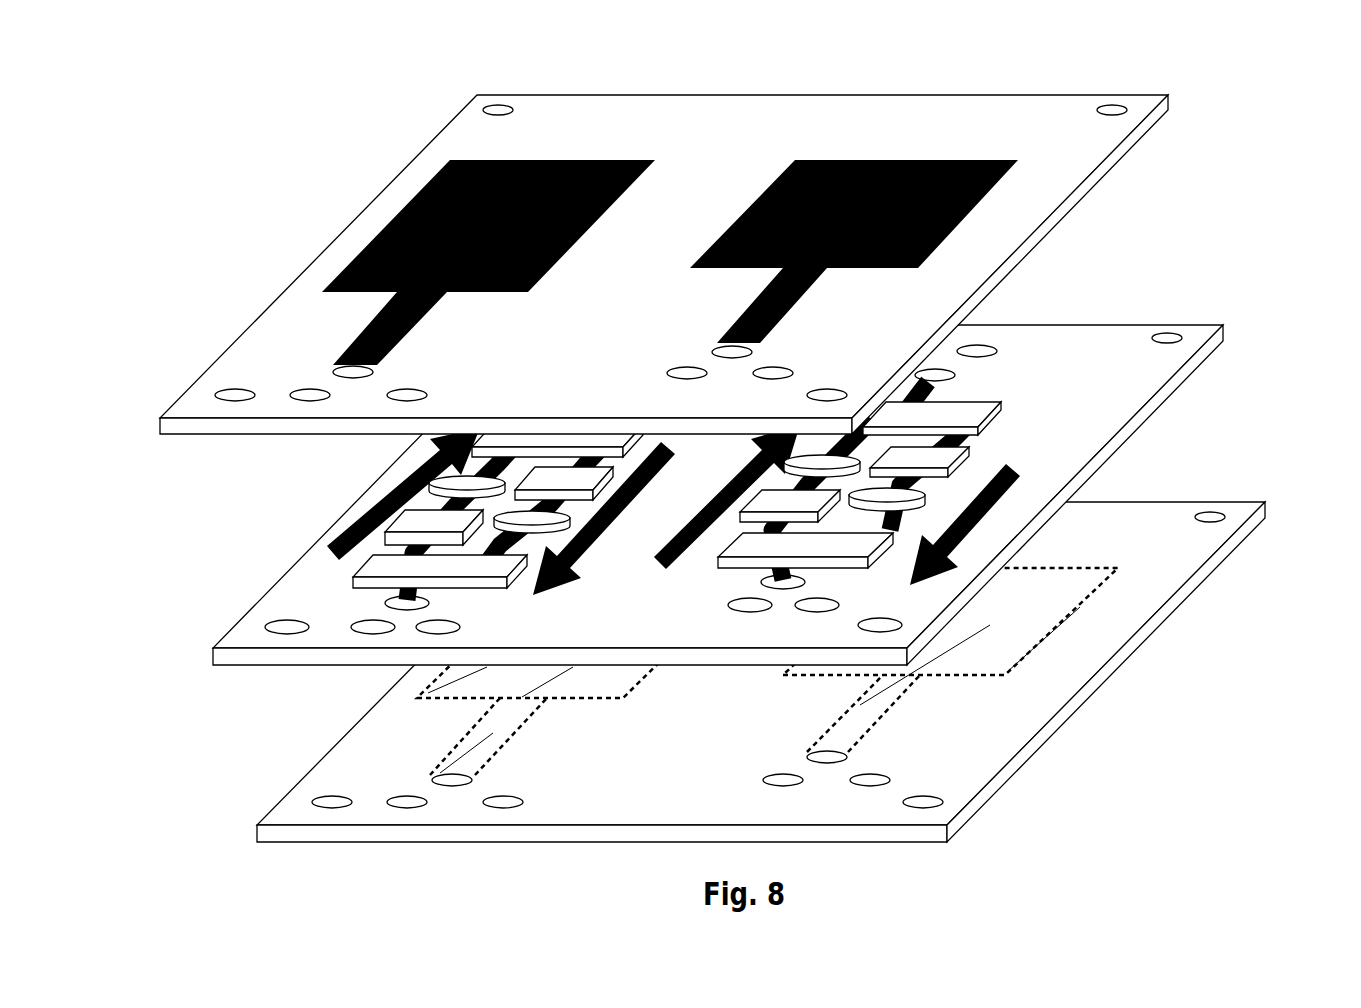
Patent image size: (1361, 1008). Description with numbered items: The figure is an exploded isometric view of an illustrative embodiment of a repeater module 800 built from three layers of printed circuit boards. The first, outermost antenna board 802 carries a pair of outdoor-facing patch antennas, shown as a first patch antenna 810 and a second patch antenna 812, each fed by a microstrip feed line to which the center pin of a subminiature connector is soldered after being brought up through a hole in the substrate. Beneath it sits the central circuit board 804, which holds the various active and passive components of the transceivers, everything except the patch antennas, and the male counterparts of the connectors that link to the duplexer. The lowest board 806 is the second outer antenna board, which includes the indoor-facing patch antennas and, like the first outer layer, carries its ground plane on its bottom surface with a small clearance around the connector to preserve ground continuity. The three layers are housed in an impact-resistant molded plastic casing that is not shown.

The antenna assembly 800 is at (740, 428).
The top substrate layer with patch antennas 802 is at (693, 224).
The middle substrate layer with feed network 804 is at (1065, 422).
The bottom ground layer with apertures 806 is at (1075, 662).
The first patch antenna element 810 is at (473, 193).
The second patch antenna element 812 is at (957, 202).